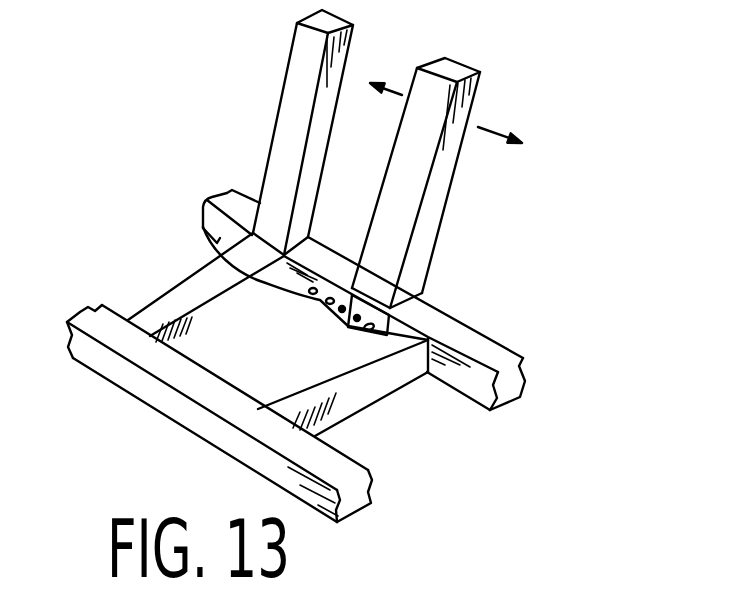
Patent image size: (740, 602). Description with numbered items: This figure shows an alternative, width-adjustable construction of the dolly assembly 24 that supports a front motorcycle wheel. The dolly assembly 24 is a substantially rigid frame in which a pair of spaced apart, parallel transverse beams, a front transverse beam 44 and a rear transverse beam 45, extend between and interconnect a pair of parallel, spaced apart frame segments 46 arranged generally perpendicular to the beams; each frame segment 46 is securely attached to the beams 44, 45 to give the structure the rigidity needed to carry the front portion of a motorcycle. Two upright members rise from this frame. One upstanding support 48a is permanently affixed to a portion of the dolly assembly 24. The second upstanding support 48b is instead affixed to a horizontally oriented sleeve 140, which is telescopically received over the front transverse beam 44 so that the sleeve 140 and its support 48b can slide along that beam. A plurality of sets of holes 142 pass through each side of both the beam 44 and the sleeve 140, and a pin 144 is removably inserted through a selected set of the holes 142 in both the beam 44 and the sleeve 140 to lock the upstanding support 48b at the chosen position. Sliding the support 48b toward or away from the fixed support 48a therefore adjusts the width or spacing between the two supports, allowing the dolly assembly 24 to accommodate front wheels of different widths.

The dolly assembly 24 is at (510, 50).
The front transverse beam 44 is at (480, 345).
The rear transverse beam 45 is at (180, 408).
The frame segments 46 is at (182, 298).
The upstanding support 48a is at (290, 109).
The second upstanding support 48b is at (435, 198).
The horizontally oriented sleeve 140 is at (423, 293).
The sets of holes 142 is at (210, 261).
The pin 144 is at (352, 328).